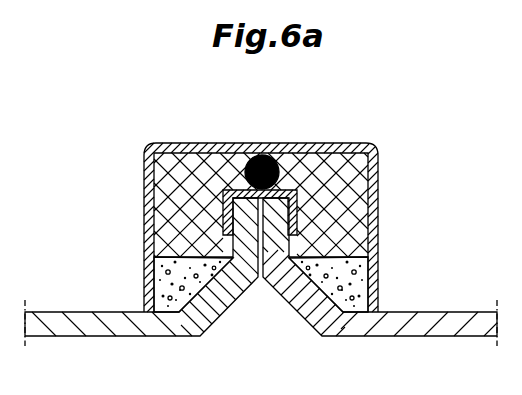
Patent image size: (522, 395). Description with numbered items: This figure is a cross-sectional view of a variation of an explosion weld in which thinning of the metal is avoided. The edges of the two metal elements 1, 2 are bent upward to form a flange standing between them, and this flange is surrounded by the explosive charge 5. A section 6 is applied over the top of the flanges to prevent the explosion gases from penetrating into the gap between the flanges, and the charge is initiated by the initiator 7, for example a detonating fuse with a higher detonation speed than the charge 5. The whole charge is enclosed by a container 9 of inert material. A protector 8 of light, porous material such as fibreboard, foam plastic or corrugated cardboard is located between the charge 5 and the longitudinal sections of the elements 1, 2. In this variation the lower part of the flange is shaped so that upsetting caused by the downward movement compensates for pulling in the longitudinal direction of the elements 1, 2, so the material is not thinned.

The metal element 1 is at (442, 322).
The metal element 2 is at (73, 323).
The explosive charge 5 is at (370, 146).
The section 6 is at (328, 153).
The initiator 7 is at (282, 157).
The protector 8 is at (370, 277).
The container 9 is at (376, 197).